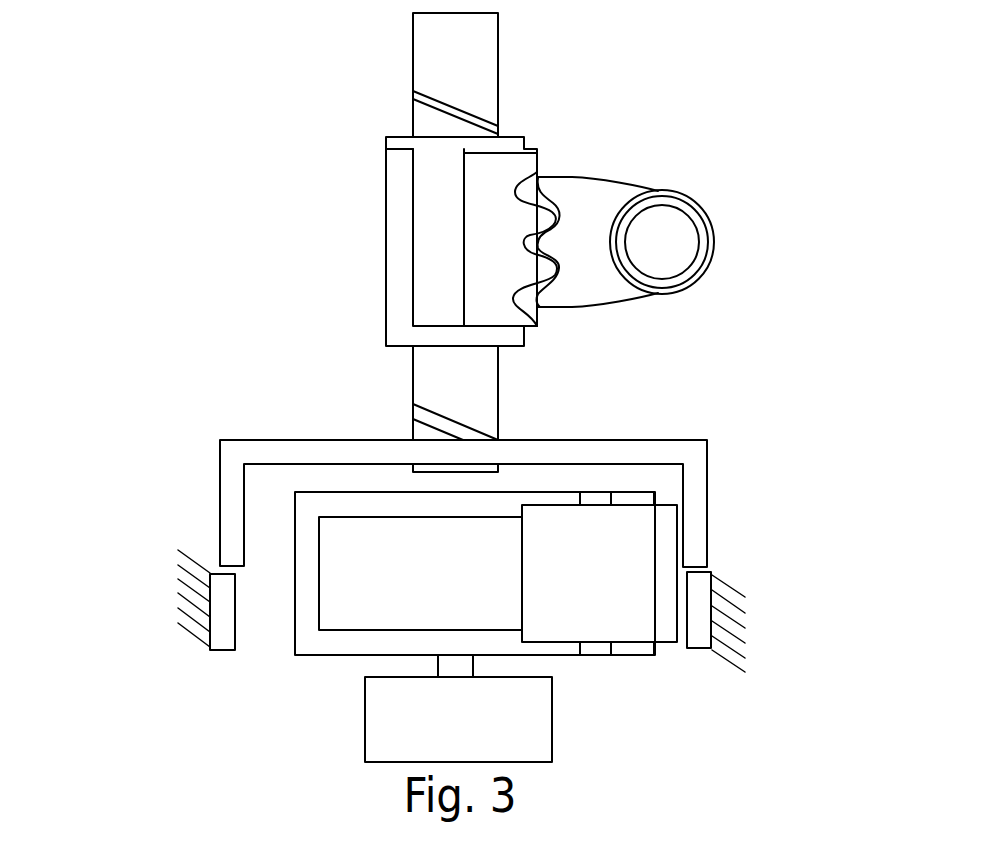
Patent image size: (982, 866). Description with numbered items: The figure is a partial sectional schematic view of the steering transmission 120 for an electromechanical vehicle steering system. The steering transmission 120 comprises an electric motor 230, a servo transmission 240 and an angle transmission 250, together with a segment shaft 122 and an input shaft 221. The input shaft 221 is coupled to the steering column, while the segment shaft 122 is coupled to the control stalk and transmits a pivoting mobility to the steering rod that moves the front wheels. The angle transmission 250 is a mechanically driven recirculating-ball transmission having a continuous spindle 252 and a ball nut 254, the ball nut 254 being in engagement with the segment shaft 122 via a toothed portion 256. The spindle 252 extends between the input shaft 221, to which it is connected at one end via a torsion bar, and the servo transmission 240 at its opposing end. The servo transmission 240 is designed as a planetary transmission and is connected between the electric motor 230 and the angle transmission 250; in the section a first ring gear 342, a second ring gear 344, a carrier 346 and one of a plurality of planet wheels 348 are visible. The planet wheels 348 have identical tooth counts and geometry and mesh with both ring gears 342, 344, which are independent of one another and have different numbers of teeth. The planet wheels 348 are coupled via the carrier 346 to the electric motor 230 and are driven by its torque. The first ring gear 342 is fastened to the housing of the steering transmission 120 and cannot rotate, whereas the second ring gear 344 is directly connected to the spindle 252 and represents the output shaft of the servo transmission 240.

The steering transmission 120 is at (292, 95).
The segment shaft 122 is at (690, 198).
The input shaft 221 is at (413, 66).
The electric motor 230 is at (458, 708).
The servo transmission 240 is at (203, 483).
The angle transmission 250 is at (340, 190).
The spindle 252 is at (413, 378).
The ball nut 254 is at (386, 271).
The toothed portion 256 is at (547, 165).
The first ring gear 342 is at (159, 588).
The second ring gear 344 is at (707, 483).
The carrier 346 is at (295, 655).
The planet wheels 348 is at (599, 573).